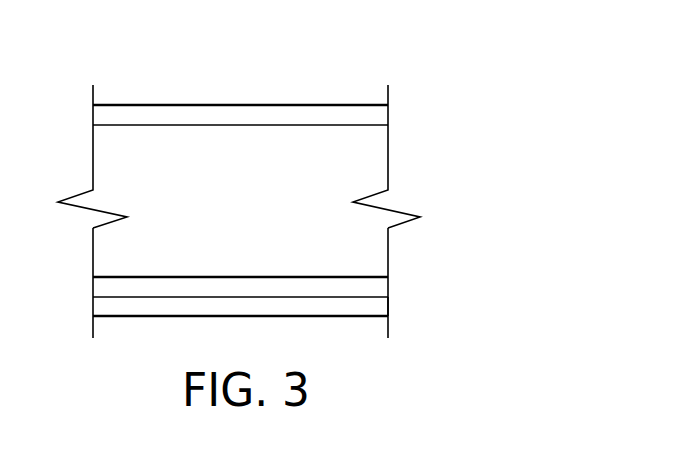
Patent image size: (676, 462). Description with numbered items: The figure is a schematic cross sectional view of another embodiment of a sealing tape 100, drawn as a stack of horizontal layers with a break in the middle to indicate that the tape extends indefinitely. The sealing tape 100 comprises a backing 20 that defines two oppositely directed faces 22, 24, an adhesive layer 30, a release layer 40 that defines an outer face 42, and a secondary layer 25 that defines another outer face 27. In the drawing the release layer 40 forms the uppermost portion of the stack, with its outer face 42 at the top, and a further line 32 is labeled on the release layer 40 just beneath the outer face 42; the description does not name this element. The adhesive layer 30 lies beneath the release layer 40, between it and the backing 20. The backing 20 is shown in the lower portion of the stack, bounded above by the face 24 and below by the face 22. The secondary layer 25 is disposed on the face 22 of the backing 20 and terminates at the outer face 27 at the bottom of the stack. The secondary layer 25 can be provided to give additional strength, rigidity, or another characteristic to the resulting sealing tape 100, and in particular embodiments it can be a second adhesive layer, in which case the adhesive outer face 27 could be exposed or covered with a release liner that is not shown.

The sealing tape 100 is at (485, 108).
The release layer 40 is at (377, 113).
The outer face 42 is at (303, 105).
The lower surface of upper layer 32 is at (160, 125).
The adhesive layer 30 is at (372, 255).
The backing 20 is at (377, 288).
The face 24 is at (128, 277).
The face 22 is at (113, 297).
The secondary layer 25 is at (377, 305).
The outer face 27 is at (140, 316).